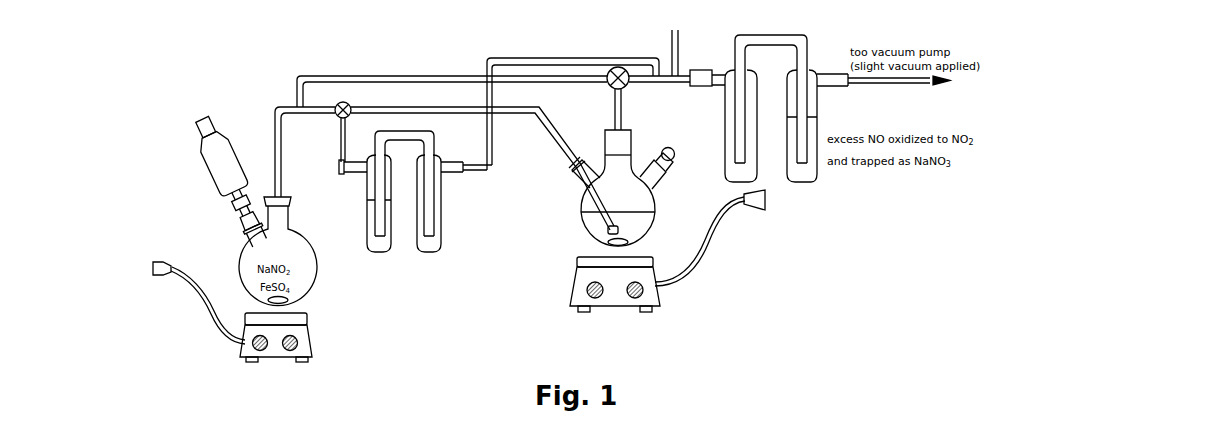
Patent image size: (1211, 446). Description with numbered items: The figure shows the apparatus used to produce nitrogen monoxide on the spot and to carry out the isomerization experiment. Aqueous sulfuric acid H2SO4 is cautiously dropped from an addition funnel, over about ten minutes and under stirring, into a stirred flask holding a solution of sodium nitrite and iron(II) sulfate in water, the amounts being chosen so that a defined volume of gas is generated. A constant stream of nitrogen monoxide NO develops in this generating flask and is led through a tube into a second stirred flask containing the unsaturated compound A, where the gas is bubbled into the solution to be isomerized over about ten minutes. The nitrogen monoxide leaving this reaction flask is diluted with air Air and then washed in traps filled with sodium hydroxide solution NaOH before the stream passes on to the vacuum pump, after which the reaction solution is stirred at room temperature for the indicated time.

The unsaturated compound A is at (609, 190).
The nitrogen monoxide NO is at (287, 128).
The air Air is at (675, 8).
The NaOH solution NaOH is at (592, 154).
The sulfuric acid H2SO4 is at (231, 181).